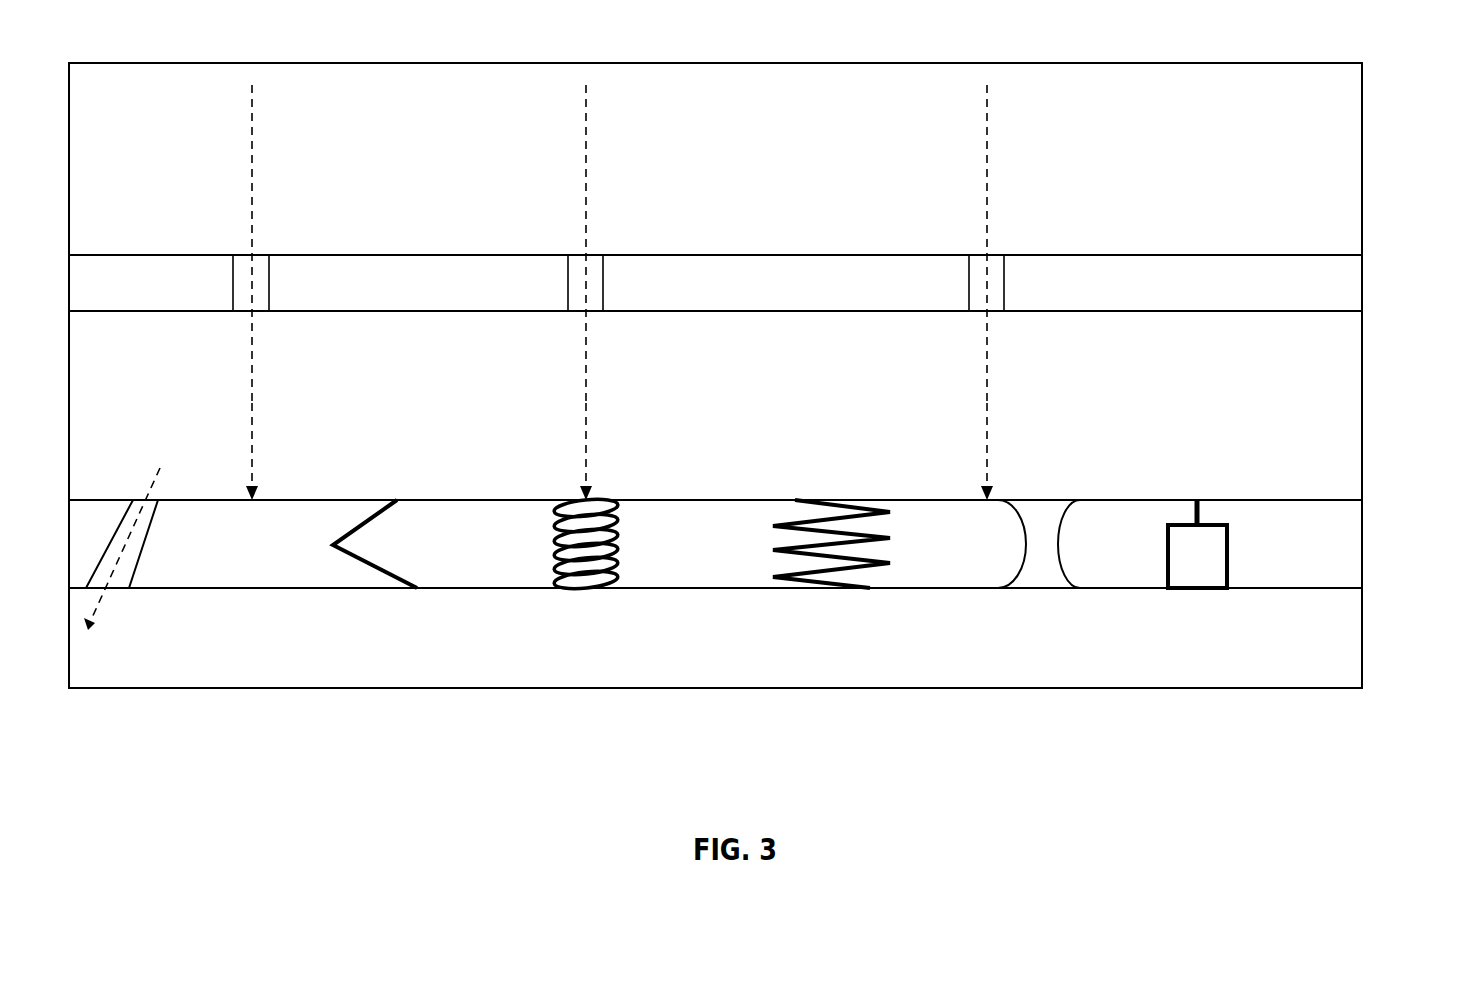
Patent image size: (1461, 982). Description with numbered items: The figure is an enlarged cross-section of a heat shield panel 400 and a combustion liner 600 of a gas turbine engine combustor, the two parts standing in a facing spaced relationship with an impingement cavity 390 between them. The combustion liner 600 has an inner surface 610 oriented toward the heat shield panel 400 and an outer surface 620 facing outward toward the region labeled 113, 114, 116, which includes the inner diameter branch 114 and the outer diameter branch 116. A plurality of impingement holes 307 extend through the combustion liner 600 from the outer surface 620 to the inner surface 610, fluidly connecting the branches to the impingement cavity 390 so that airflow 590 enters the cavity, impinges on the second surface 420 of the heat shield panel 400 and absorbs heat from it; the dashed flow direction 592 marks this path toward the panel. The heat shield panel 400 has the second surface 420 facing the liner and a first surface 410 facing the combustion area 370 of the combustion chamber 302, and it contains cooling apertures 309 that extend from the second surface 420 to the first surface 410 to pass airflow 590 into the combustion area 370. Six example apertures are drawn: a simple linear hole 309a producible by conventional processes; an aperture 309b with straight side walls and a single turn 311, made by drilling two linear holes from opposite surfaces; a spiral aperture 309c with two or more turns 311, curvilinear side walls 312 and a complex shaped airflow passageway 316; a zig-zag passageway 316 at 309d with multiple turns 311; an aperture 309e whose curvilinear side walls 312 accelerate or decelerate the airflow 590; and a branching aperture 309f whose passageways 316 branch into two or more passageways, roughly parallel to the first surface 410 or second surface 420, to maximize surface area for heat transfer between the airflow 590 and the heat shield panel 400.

The component 113 is at (730, 167).
The inner diameter branch 114 is at (790, 167).
The outer diameter branch 116 is at (842, 167).
The combustion chamber 302 is at (661, 668).
The impingement holes 307 is at (269, 280).
The cooling apertures 309 is at (142, 550).
The simple linear hole 309a is at (186, 526).
The cooling aperture with one turn 309b is at (403, 539).
The spiral passageway cooling aperture 309c is at (666, 540).
The zig-zag passageway cooling aperture 309d is at (900, 540).
The curvilinear cooling aperture 309e is at (1066, 540).
The branching cooling aperture 309f is at (1253, 604).
The turn 311 is at (333, 545).
The curvilinear side walls 312 is at (1025, 547).
The complex shaped airflow passageways 316 is at (617, 512).
The combustion area 370 is at (823, 668).
The impingement cavity 390 is at (133, 359).
The heat shield panel 400 is at (752, 548).
The first surface 410 is at (1348, 588).
The second surface 420 is at (1348, 500).
The airflow 590 is at (252, 86).
The flow direction 592 is at (250, 403).
The combustion liner 600 is at (751, 284).
The inner surface 610 is at (1260, 311).
The outer surface 620 is at (1245, 255).